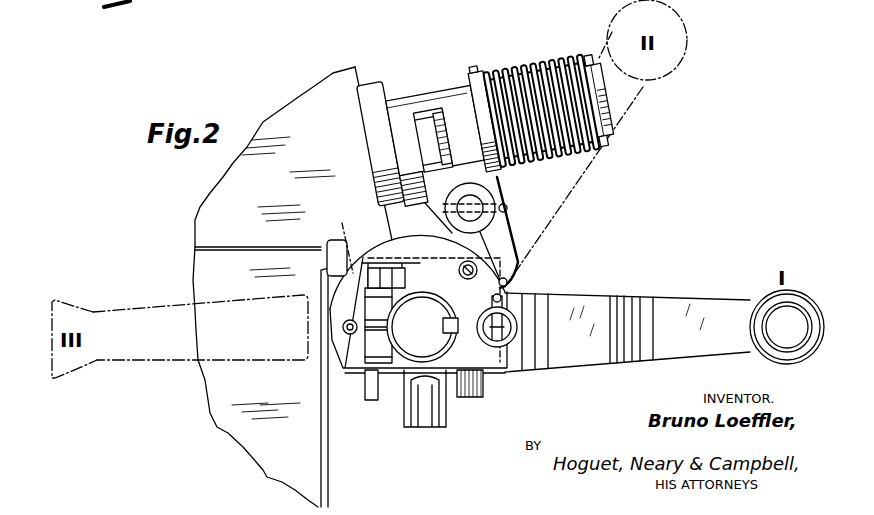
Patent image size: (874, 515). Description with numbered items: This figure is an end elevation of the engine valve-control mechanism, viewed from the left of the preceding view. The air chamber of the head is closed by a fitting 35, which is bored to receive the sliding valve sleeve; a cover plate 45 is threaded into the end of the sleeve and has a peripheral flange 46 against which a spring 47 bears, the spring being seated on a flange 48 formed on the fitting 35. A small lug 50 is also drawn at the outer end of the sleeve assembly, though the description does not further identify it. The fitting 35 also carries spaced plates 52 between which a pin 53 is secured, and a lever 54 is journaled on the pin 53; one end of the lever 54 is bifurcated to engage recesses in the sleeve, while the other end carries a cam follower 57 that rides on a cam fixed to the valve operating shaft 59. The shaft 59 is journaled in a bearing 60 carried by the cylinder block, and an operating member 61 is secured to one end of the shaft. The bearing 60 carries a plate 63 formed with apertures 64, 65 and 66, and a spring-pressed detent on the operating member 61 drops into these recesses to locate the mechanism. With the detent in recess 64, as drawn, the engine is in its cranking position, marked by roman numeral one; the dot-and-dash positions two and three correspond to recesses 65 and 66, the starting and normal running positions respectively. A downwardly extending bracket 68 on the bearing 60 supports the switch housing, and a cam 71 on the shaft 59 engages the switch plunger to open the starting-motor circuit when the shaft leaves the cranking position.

The fitting 35 is at (443, 103).
The cover plate 45 is at (612, 106).
The peripheral flange 46 is at (612, 149).
The spring 47 is at (560, 63).
The flange 48 is at (481, 74).
The upper lug 50 is at (601, 62).
The spaced plates 52 is at (508, 206).
The pin 53 is at (487, 215).
The lever 54 is at (530, 250).
The cam follower 57 is at (508, 281).
The valve operating shaft 59 is at (470, 398).
The bearing 60 is at (400, 385).
The operating member 61 is at (615, 300).
The plate 63 is at (398, 245).
The aperture 64 is at (505, 348).
The aperture 65 is at (478, 269).
The aperture 66 is at (345, 333).
The bracket 68 is at (438, 428).
The cam 71 is at (338, 240).